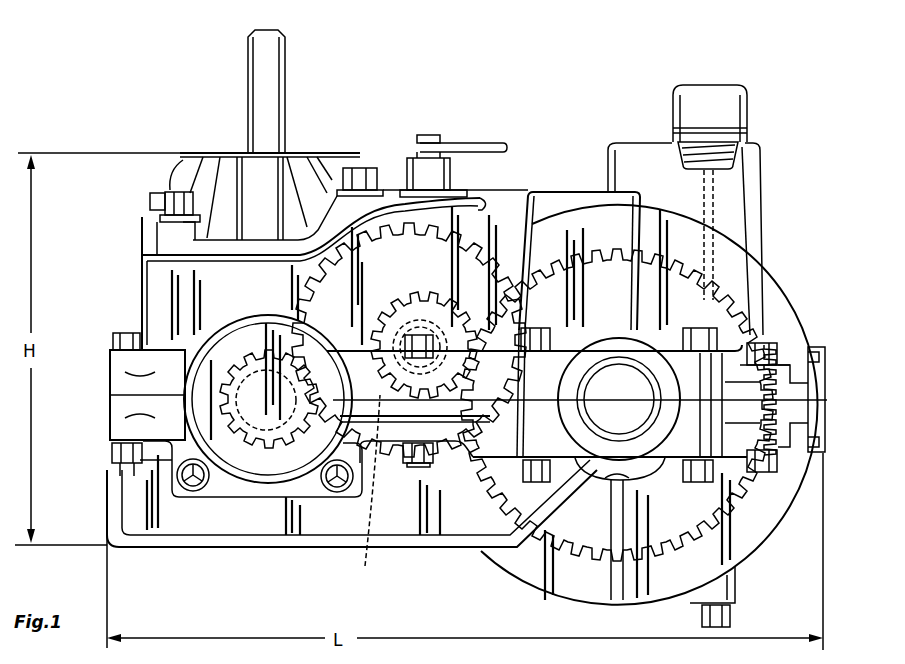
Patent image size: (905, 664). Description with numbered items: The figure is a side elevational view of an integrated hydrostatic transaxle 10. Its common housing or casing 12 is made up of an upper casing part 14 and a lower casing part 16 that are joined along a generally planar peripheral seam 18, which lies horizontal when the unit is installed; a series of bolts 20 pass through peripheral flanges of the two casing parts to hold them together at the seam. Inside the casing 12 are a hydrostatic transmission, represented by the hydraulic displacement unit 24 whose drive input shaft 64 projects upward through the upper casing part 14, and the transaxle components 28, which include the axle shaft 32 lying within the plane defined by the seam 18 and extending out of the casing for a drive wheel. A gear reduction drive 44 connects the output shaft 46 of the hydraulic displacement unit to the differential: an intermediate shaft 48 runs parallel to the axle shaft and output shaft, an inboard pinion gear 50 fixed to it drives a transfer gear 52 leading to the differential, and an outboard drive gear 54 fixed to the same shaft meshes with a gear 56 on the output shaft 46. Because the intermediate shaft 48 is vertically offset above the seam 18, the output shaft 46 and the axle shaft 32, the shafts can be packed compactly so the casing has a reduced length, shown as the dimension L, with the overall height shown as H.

The integrated hydrostatic transaxle 10 is at (130, 277).
The common housing or casing 12 is at (133, 253).
The upper casing part 14 is at (147, 312).
The lower casing part 16 is at (112, 455).
The peripheral seam 18 is at (128, 397).
The bolts 20 is at (125, 333).
The hydraulic displacement unit 24 is at (238, 168).
The transaxle components 28 is at (773, 322).
The axle shaft 32 is at (665, 350).
The gear reduction drive 44 is at (488, 248).
The output shaft 46 is at (258, 440).
The intermediate shaft 48 is at (398, 395).
The inboard pinion gear 50 is at (365, 566).
The transfer gear 52 is at (628, 386).
The outboard drive gear 54 is at (527, 225).
The gear 56 is at (275, 435).
The drive input shaft 64 is at (265, 97).